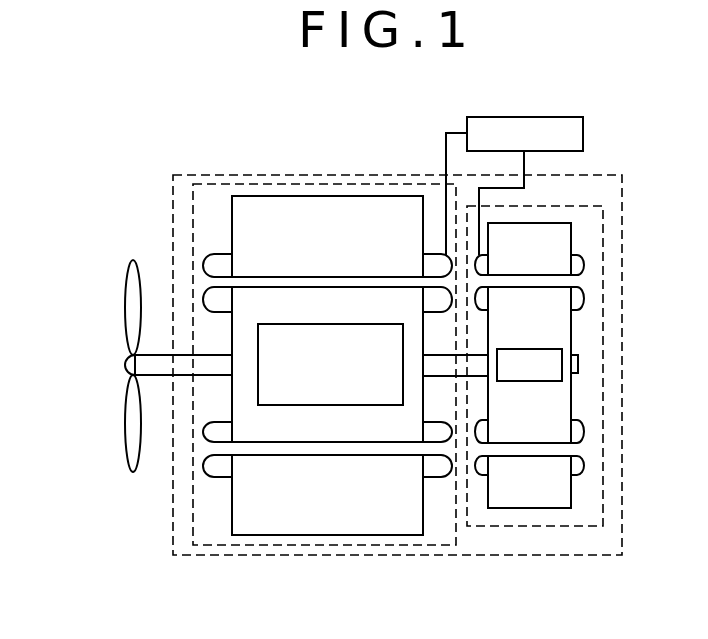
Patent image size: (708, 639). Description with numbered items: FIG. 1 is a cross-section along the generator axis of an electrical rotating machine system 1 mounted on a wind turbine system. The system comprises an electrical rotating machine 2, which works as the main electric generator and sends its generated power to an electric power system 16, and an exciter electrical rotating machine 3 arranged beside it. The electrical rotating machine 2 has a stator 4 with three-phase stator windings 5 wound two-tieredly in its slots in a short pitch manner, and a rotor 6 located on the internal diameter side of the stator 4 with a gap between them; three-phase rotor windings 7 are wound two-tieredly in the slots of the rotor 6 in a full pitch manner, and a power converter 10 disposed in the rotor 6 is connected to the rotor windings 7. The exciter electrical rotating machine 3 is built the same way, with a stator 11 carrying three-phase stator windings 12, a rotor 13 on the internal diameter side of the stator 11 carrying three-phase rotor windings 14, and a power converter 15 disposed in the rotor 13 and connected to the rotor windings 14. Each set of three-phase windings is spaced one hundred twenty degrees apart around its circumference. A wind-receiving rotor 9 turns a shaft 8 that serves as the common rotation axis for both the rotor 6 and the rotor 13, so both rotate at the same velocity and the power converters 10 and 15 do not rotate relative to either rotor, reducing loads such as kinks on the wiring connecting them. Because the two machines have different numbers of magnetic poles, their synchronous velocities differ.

The electrical rotating machine system 1 is at (625, 183).
The electrical rotating machine 2 is at (254, 184).
The exciter electrical rotating machine 3 is at (605, 213).
The stator 4 is at (232, 210).
The three-phase stator windings 5 is at (203, 465).
The rotor 6 is at (372, 290).
The three-phase rotor windings 7 is at (203, 435).
The shaft 8 is at (157, 355).
The rotor 9 is at (133, 260).
The power converter 10 is at (333, 383).
The stator 11 is at (571, 242).
The three-phase stator windings 12 is at (583, 462).
The rotor 13 is at (571, 327).
The three-phase rotor windings 14 is at (583, 428).
The power converter 15 is at (552, 375).
The electric power system 16 is at (583, 133).